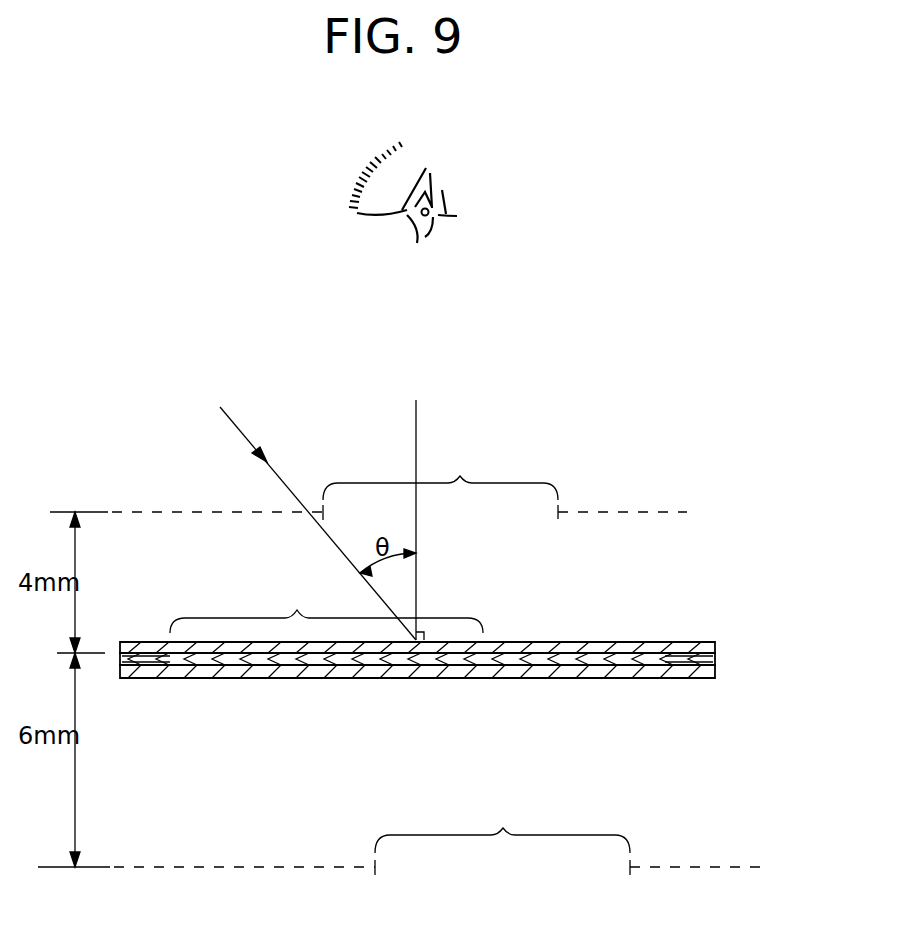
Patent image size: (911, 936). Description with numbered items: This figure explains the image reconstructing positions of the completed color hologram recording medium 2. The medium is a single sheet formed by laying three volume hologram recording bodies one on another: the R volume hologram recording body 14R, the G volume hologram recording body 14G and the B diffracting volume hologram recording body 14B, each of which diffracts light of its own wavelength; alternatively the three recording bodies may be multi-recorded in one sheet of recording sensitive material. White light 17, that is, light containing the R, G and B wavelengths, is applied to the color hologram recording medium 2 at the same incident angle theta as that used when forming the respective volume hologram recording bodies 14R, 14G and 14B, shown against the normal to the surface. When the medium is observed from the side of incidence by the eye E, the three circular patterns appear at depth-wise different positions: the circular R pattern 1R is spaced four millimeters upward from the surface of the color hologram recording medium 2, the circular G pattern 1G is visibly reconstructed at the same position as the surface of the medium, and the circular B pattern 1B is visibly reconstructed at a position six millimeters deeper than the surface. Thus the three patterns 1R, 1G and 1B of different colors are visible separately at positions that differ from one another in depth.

The eye of observer E is at (456, 177).
The white light 17 is at (238, 427).
The circular R pattern 1R is at (440, 478).
The circular G pattern 1G is at (326, 606).
The circular B pattern 1B is at (502, 836).
The color hologram recording medium 2 is at (490, 659).
The B diffracting volume hologram recording body 14B is at (715, 642).
The G volume hologram recording body 14G is at (715, 659).
The R volume hologram recording body 14R is at (715, 678).